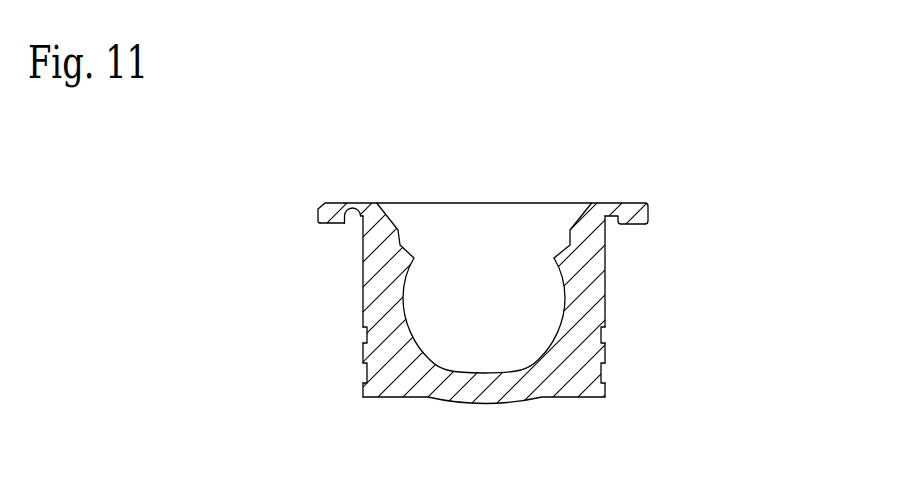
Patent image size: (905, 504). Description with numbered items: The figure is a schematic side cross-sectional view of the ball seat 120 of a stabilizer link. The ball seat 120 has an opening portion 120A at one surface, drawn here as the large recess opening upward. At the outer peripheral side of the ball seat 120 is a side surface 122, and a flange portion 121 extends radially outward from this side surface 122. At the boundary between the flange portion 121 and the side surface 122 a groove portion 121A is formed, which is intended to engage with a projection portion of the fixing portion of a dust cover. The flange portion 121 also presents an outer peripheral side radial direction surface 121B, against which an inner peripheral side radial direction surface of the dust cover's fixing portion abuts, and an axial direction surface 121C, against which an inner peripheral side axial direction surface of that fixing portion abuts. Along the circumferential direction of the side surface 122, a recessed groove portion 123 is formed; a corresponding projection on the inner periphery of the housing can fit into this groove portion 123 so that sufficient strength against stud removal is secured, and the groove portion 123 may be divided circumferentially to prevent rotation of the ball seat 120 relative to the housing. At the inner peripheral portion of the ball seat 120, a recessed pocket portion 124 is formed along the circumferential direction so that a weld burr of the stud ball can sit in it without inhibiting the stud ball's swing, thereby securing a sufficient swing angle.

The ball seat 120 is at (638, 175).
The opening portion 120A is at (436, 222).
The flange portion 121 is at (647, 212).
The groove portion 121A is at (351, 216).
The outer peripheral side radial direction surface 121B is at (330, 224).
The axial direction surface 121C is at (317, 221).
The side surface 122 is at (605, 287).
The groove portion 123 is at (605, 336).
The pocket portion 124 is at (560, 249).